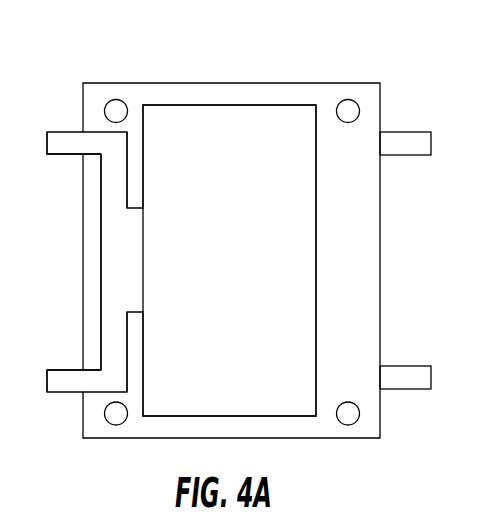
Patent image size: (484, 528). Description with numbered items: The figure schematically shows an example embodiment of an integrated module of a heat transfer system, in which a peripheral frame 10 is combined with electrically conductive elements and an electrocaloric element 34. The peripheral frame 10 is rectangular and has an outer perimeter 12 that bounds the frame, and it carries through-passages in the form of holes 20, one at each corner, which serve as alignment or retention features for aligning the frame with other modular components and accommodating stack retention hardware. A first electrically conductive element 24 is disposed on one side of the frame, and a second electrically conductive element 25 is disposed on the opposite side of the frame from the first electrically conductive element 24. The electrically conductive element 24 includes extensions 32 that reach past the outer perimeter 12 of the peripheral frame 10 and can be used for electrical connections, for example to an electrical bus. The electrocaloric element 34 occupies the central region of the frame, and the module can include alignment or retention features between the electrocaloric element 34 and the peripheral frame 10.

The peripheral frame 10 is at (172, 93).
The outer perimeter 12 is at (88, 227).
The holes 20 is at (110, 110).
The electrically conductive element 24 is at (118, 265).
The second electrically conductive element 25 is at (398, 140).
The extensions 32 is at (67, 150).
The electrocaloric element 34 is at (238, 115).